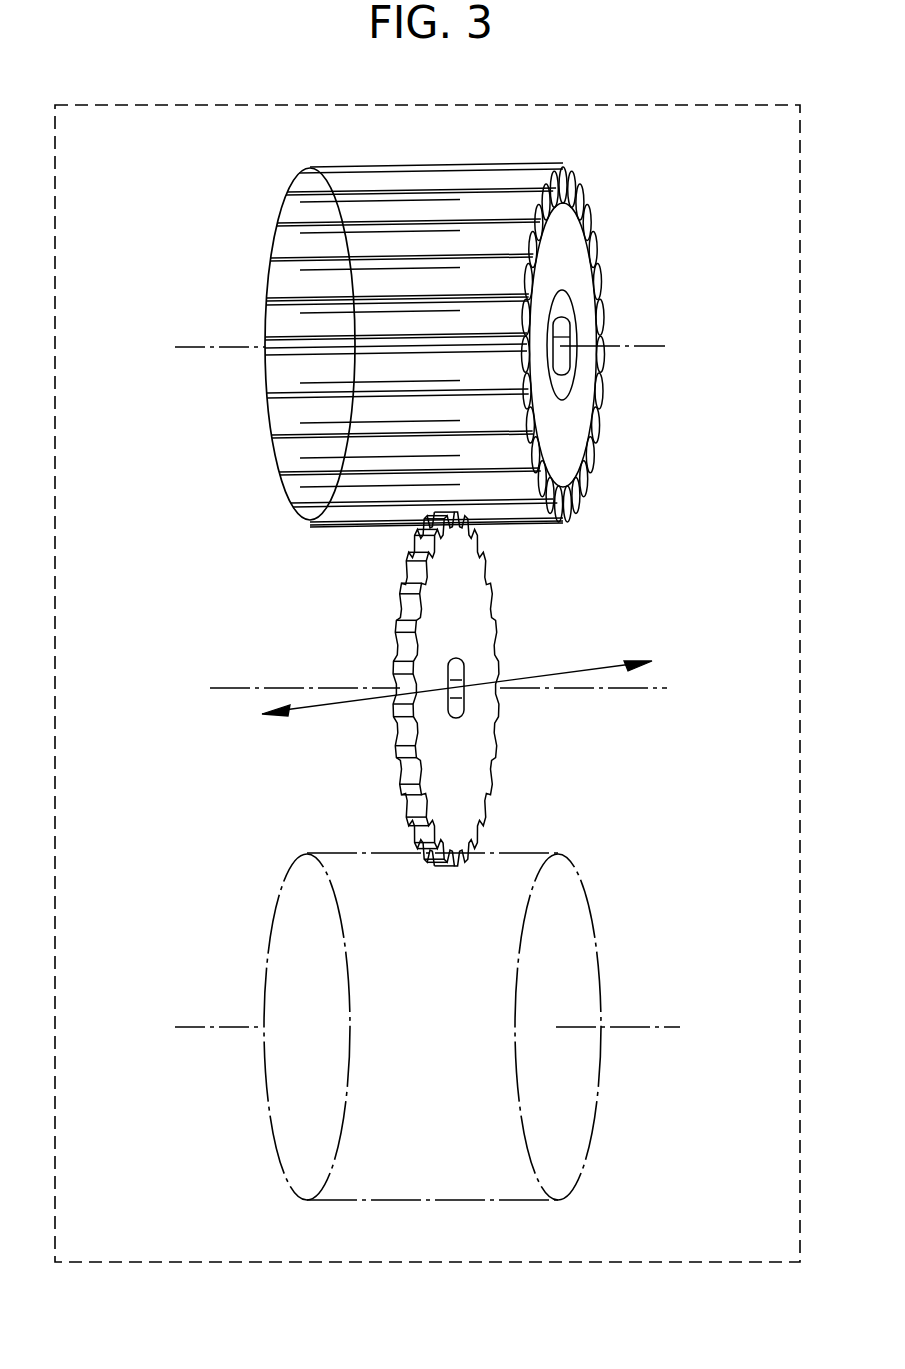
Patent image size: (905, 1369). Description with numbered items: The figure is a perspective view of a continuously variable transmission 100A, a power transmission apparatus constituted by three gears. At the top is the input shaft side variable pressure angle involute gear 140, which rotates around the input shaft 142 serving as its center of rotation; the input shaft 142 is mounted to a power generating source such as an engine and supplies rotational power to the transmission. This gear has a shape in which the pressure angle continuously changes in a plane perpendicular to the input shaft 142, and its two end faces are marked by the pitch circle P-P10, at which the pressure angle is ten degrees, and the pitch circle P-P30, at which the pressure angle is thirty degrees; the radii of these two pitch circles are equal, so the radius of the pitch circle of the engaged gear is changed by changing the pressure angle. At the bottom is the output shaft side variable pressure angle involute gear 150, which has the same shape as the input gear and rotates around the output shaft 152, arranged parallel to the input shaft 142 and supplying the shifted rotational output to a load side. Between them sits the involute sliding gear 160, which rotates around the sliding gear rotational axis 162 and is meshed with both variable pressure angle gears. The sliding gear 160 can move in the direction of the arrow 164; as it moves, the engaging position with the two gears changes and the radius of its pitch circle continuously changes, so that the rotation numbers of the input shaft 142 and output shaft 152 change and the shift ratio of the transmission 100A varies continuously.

The continuously variable transmission 100A is at (641, 105).
The input shaft side variable pressure angle involute gear 140 is at (568, 252).
The input shaft 142 is at (632, 347).
The output shaft side variable pressure angle involute gear 150 is at (562, 890).
The output shaft 152 is at (636, 1027).
The involute sliding gear 160 is at (492, 578).
The sliding gear rotational axis 162 is at (638, 688).
The arrow (moving direction) 164 is at (615, 664).
The pitch circle P-P10 is at (300, 515).
The pitch circle P-P30 is at (600, 418).